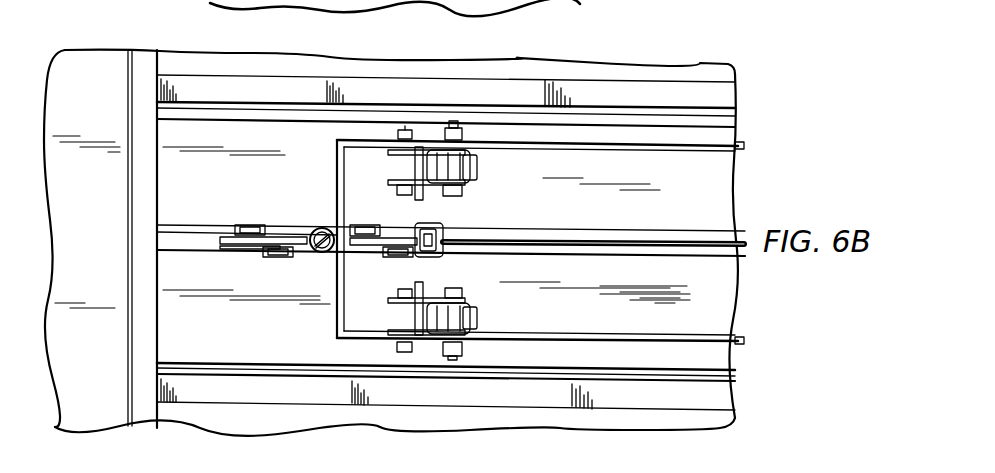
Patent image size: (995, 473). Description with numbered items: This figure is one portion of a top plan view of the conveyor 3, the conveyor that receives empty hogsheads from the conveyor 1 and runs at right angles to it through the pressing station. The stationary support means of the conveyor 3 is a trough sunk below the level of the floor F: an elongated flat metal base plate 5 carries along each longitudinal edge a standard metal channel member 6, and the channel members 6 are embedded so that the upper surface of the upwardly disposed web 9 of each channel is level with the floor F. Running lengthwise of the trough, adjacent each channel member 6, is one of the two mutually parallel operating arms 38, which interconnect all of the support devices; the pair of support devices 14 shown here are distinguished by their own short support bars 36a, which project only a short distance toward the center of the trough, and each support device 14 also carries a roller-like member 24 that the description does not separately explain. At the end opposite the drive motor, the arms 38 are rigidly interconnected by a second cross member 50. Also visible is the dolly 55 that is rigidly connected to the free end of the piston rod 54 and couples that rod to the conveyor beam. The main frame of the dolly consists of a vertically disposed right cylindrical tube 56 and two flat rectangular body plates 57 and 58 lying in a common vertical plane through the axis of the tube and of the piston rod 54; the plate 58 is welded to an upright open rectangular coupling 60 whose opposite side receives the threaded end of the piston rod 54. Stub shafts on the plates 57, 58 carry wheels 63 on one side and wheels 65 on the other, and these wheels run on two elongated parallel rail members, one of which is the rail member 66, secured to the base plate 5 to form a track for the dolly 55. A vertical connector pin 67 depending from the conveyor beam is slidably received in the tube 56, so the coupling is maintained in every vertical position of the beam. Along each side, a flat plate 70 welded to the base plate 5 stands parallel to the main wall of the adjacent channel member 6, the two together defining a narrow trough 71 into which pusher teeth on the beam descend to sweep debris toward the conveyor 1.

The conveyor 1 is at (92, 46).
The conveyor 3 is at (188, 43).
The base plate 5 is at (578, 215).
The channel member 6 is at (778, 110).
The web 9 is at (660, 97).
The support device 14 is at (481, 178).
The roller 24 is at (472, 165).
The short support bar 36a is at (415, 168).
The operating arm 38 is at (720, 153).
The second cross member 50 is at (340, 312).
The piston rod 54 is at (718, 238).
The dolly 55 is at (292, 224).
The tube 56 is at (322, 253).
The body plate 57 is at (222, 248).
The body plate 58 is at (360, 250).
The coupling 60 is at (437, 222).
The wheel 63 is at (253, 225).
The wheel 65 is at (273, 258).
The rail member 66 is at (667, 225).
The connector pin 67 is at (328, 218).
The plate 70 is at (742, 133).
The trough 71 is at (743, 113).
The floor F is at (618, 70).